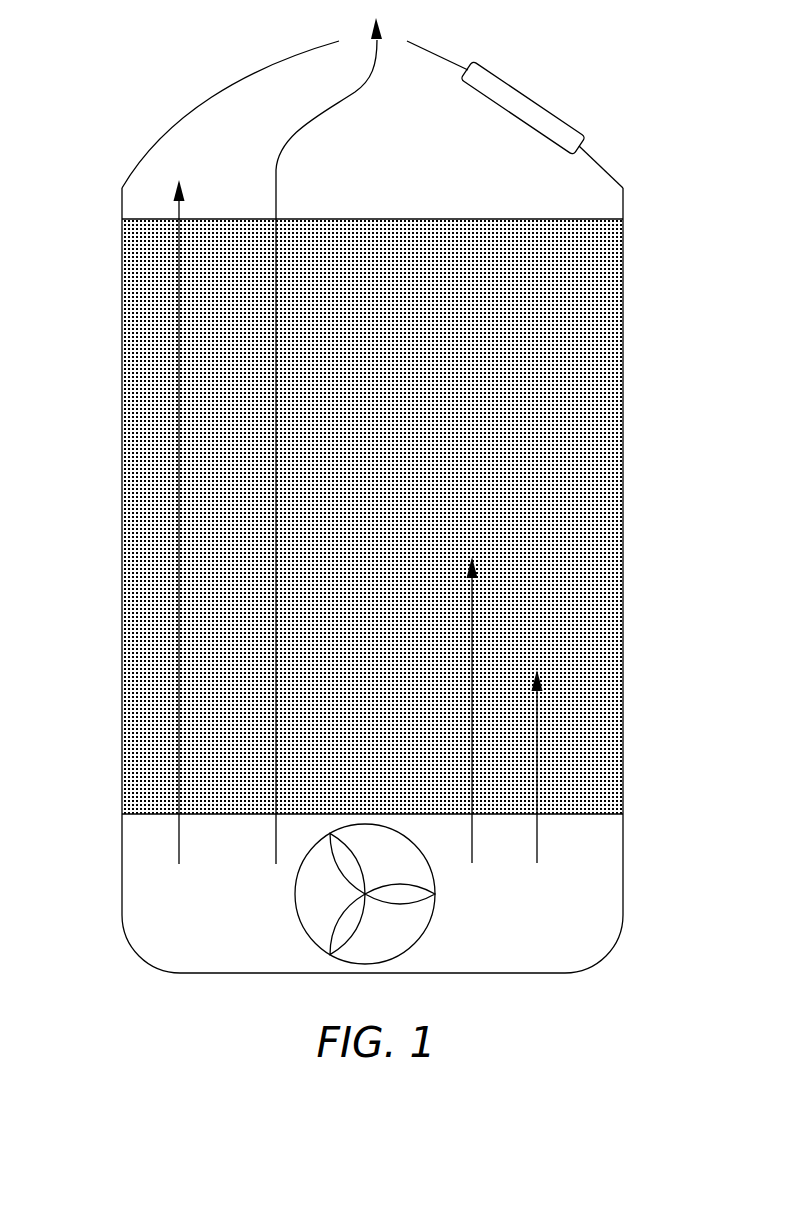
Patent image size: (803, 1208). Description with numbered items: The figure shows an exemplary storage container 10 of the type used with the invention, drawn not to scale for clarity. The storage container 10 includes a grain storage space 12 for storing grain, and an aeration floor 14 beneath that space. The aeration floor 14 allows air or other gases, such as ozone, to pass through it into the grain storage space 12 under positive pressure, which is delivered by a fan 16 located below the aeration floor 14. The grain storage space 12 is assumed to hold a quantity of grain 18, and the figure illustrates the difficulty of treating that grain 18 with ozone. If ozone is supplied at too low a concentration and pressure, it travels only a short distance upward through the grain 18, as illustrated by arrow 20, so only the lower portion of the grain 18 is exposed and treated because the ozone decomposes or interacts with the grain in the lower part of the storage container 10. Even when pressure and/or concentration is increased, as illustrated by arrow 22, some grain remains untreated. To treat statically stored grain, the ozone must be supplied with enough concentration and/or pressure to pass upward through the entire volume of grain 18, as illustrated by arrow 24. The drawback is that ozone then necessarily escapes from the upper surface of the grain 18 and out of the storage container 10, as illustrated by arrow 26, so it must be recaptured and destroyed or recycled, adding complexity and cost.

The storage container 10 is at (122, 116).
The grain storage space 12 is at (650, 165).
The aeration floor 14 is at (587, 813).
The fan 16 is at (293, 898).
The grain 18 is at (142, 522).
The arrow 20 is at (537, 760).
The arrow 22 is at (472, 652).
The arrow 24 is at (180, 440).
The arrow 26 is at (277, 342).